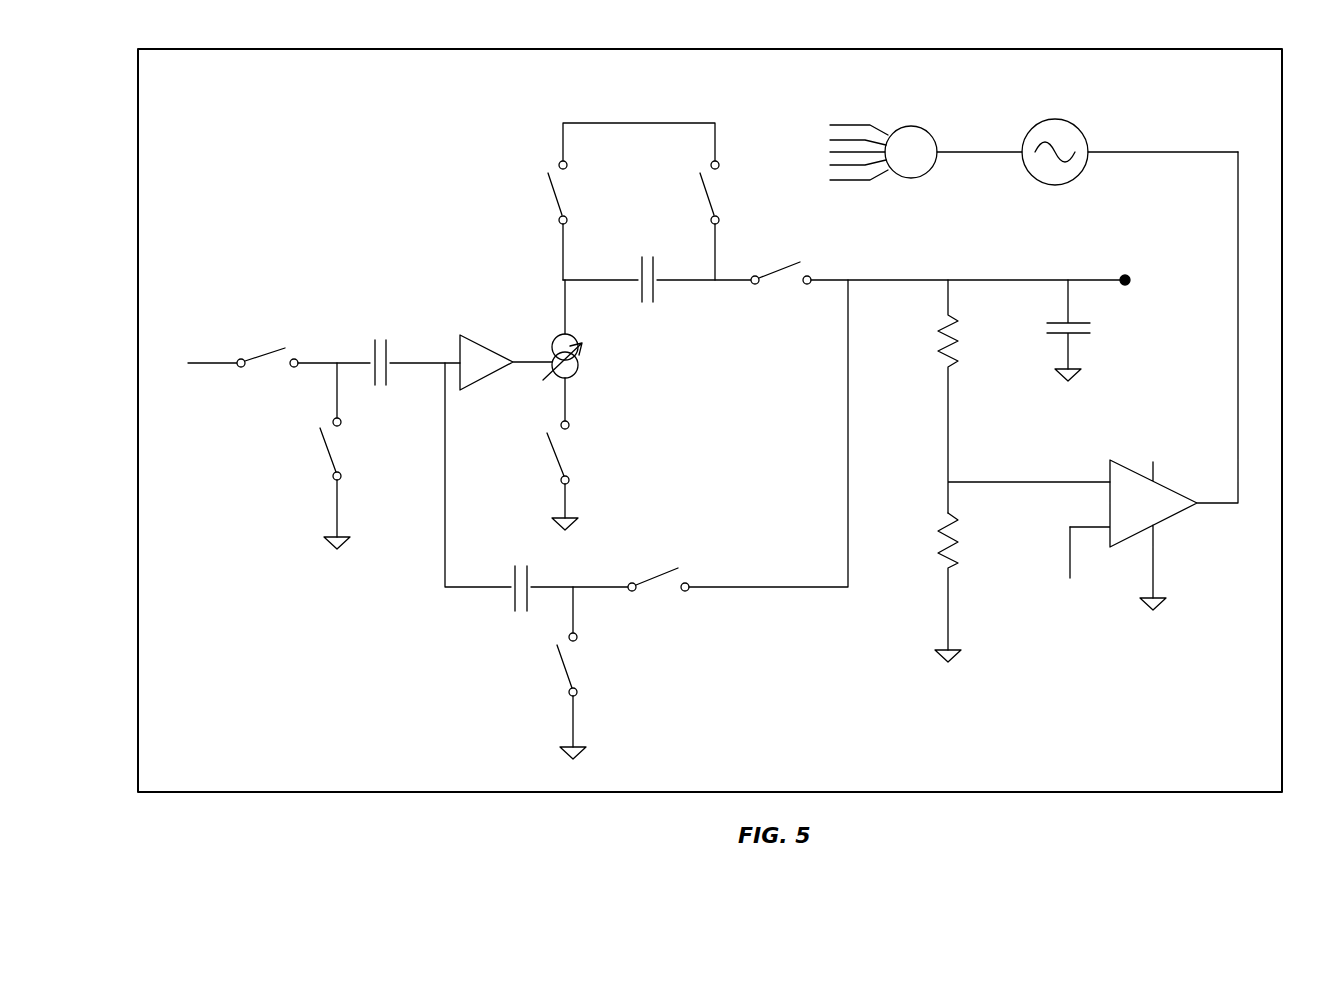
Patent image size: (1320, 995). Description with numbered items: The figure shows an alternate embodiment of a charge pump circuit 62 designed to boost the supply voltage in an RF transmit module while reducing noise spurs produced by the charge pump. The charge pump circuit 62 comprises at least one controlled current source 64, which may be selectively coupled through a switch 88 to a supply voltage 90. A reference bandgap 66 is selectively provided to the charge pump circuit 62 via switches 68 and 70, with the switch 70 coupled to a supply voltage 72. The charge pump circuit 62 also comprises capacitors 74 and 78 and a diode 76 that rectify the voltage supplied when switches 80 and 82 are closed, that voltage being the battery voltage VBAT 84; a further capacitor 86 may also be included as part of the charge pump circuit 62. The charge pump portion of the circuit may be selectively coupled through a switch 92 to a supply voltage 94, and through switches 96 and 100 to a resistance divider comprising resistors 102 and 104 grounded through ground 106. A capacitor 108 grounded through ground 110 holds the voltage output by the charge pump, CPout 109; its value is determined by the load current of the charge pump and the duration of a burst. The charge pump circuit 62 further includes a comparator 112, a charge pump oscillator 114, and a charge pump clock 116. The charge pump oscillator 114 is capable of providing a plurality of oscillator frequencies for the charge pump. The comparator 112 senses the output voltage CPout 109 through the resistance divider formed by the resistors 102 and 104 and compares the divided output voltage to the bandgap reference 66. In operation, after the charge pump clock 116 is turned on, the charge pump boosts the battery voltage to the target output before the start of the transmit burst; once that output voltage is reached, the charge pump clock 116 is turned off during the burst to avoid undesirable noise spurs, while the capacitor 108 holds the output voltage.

The charge pump circuit 62 is at (1120, 48).
The controlled current source 64 is at (580, 368).
The reference bandgap 66 is at (183, 358).
The switch 68 is at (268, 342).
The switch 70 is at (320, 452).
The supply voltage 72 is at (326, 546).
The capacitor 74 is at (383, 340).
The diode 76 is at (472, 344).
The capacitor 78 is at (517, 565).
The switch 80 is at (550, 200).
The switch 82 is at (714, 190).
The VBAT 84 is at (665, 93).
The capacitor 86 is at (646, 255).
The switch 88 is at (566, 450).
The supply voltage 90 is at (575, 524).
The switch 92 is at (557, 665).
The supply voltage 94 is at (567, 752).
The switch 96 is at (662, 582).
The switch 100 is at (782, 262).
The resistor 102 is at (940, 355).
The resistor 104 is at (937, 558).
The ground 106 is at (940, 655).
The capacitor 108 is at (1095, 330).
The CPout 109 is at (1115, 240).
The ground 110 is at (1083, 375).
The comparator 112 is at (1165, 487).
The charge pump oscillator 114 is at (1080, 125).
The charge pump clock 116 is at (930, 128).